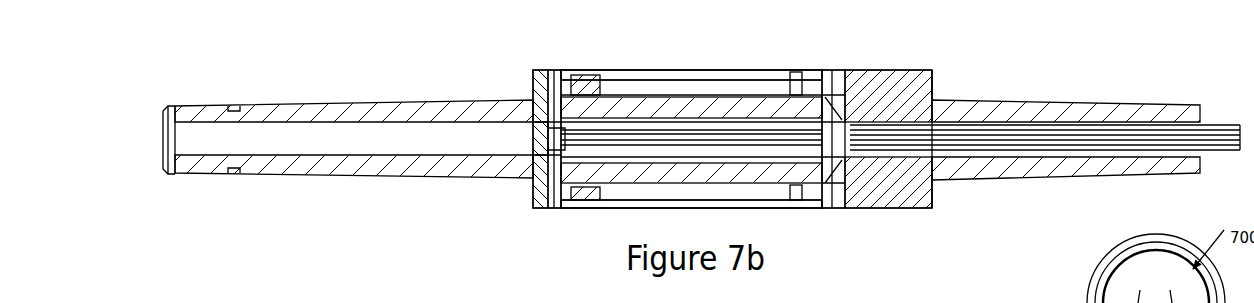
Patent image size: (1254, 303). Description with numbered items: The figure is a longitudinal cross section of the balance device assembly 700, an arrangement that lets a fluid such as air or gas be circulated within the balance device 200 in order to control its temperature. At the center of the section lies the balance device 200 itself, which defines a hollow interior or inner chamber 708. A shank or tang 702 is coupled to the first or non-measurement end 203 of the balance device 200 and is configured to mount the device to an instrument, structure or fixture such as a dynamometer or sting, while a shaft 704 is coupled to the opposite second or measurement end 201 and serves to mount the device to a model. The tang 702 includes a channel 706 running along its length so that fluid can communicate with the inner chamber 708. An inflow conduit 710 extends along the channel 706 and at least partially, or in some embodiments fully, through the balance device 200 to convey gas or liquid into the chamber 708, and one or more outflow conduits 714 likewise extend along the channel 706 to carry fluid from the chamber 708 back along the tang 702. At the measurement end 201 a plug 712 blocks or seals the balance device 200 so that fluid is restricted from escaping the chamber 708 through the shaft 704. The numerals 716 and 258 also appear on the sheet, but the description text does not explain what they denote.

The balance device assembly 700 is at (226, 42).
The shaft 704 is at (338, 103).
The plug 712 is at (546, 136).
The measurement end 201 is at (545, 67).
The balance device 200 is at (660, 67).
The inner chamber 708 is at (703, 74).
The non-measurement end 203 is at (846, 66).
The tang 702 is at (978, 103).
The channel 706 is at (1000, 120).
The inflow conduit 710 is at (1080, 128).
The outflow conduits 714 is at (1160, 143).
The housing ring 716 is at (1133, 302).
The spring 258 is at (1062, 302).